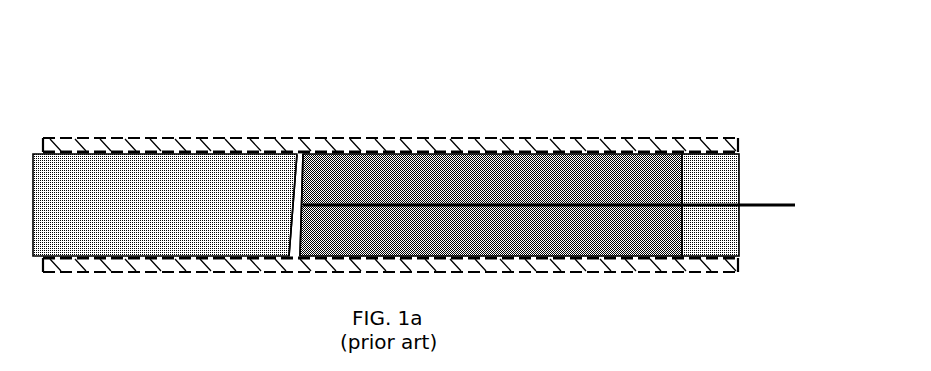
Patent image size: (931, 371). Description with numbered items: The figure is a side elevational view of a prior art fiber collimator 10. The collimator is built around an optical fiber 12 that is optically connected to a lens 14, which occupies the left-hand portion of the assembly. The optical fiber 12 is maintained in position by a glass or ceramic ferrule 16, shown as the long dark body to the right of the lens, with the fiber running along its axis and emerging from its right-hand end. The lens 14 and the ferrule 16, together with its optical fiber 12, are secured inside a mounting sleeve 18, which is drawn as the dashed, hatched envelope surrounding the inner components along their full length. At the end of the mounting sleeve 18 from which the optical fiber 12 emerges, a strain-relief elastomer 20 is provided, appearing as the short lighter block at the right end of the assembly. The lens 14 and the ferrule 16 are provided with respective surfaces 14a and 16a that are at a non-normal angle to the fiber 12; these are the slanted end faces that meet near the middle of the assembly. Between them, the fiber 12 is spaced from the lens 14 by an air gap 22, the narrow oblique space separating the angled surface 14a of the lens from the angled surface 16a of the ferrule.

The fiber collimator 10 is at (111, 97).
The optical fiber 12 is at (774, 206).
The lens 14 is at (190, 170).
The surface of lens 14a is at (298, 160).
The ferrule 16 is at (638, 177).
The surface of ferrule 16a is at (302, 163).
The mounting sleeve 18 is at (563, 142).
The strain-relief elastomer 20 is at (722, 237).
The air gap 22 is at (303, 183).